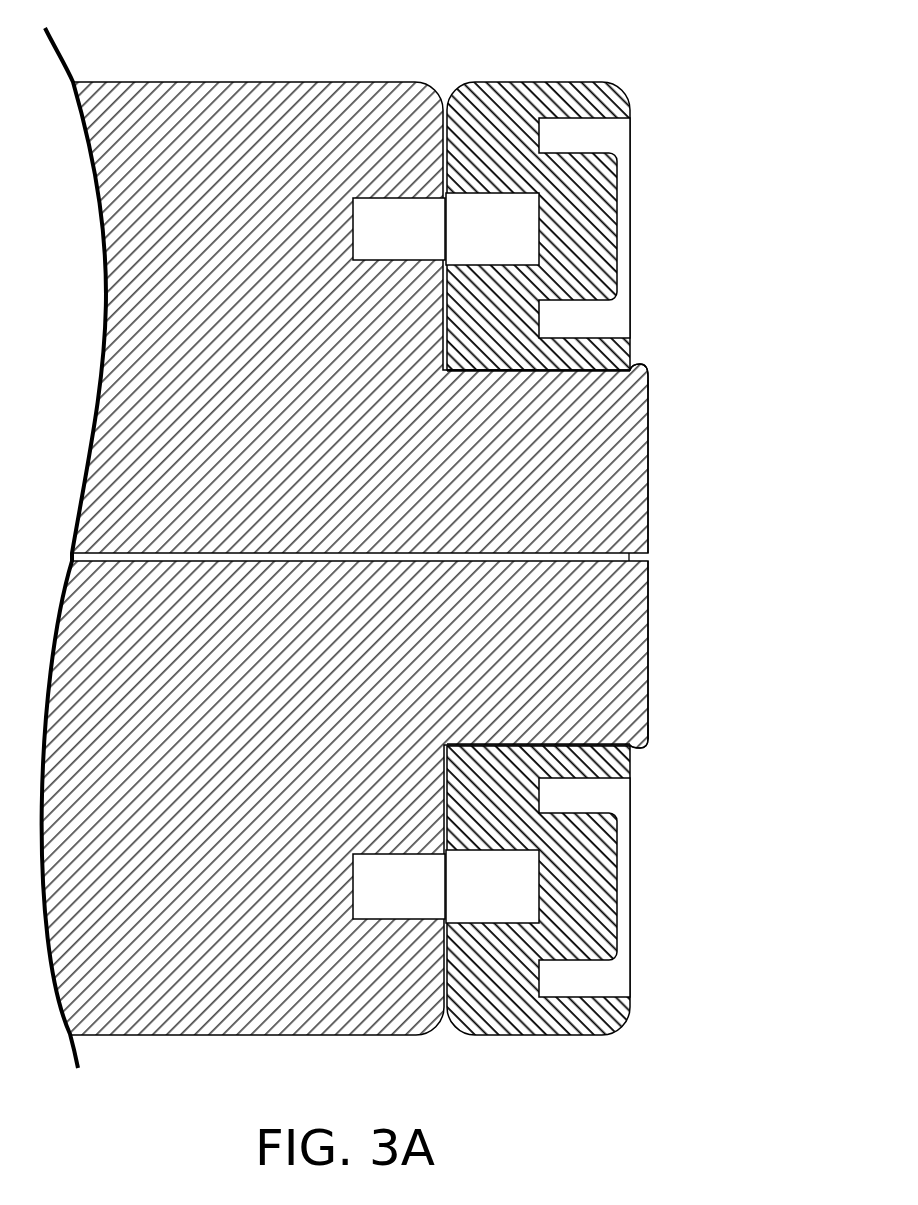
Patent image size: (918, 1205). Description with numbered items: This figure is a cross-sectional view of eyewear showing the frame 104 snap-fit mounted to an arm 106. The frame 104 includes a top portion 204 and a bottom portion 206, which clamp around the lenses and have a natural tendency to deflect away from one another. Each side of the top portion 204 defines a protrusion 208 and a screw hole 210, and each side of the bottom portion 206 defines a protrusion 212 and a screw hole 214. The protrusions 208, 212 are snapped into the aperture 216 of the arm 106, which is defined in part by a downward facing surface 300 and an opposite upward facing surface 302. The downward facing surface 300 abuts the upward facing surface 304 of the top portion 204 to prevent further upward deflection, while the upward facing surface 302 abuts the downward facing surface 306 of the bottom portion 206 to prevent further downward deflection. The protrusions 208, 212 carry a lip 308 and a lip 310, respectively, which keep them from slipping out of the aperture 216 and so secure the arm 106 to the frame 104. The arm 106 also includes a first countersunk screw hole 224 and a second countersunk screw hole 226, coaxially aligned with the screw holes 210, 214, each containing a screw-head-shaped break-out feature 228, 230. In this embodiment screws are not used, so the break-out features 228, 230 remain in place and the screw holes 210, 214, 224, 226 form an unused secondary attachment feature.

The frame 104 is at (200, 82).
The arm 106 is at (488, 82).
The top portion 204 is at (360, 317).
The bottom portion 206 is at (345, 798).
The protrusion 208 is at (637, 458).
The screw hole 210 is at (383, 198).
The protrusion 212 is at (641, 680).
The screw hole 214 is at (377, 919).
The aperture 216 is at (744, 380).
The first countersunk screw hole 224 is at (497, 193).
The second countersunk screw hole 226 is at (552, 970).
The break-out feature 228 is at (631, 219).
The break-out feature 230 is at (631, 872).
The downward facing surface 300 is at (500, 372).
The upward facing surface 302 is at (485, 746).
The upward facing surface 304 is at (497, 370).
The downward facing surface 306 is at (465, 750).
The lip 308 is at (646, 363).
The lip 310 is at (645, 750).